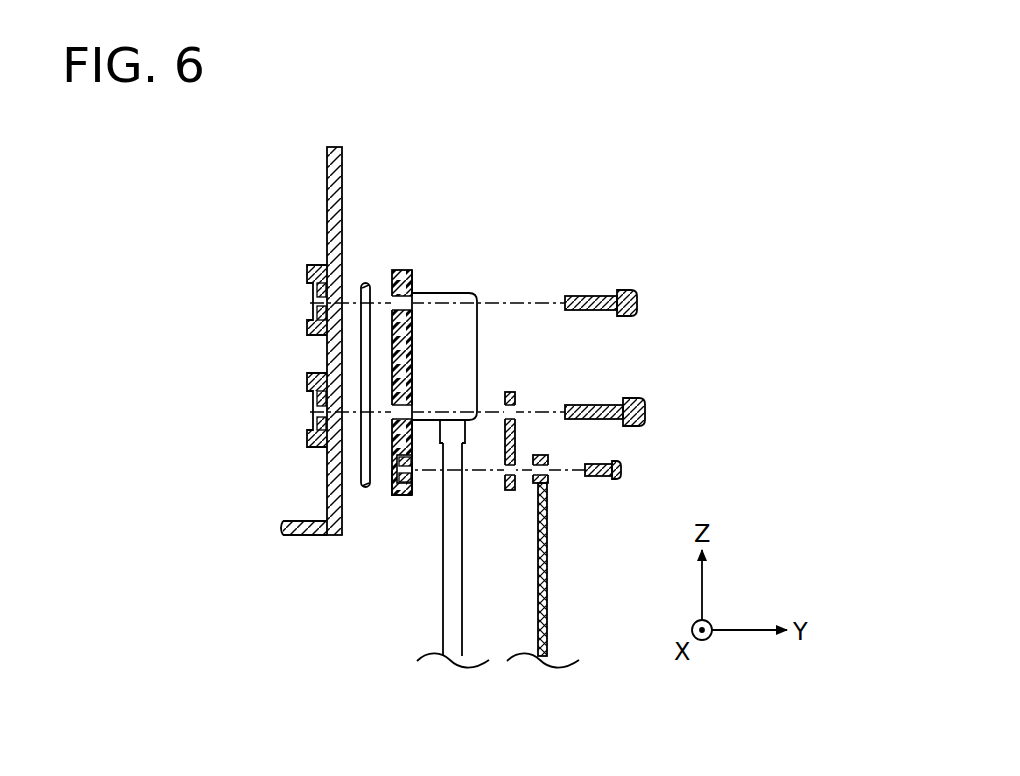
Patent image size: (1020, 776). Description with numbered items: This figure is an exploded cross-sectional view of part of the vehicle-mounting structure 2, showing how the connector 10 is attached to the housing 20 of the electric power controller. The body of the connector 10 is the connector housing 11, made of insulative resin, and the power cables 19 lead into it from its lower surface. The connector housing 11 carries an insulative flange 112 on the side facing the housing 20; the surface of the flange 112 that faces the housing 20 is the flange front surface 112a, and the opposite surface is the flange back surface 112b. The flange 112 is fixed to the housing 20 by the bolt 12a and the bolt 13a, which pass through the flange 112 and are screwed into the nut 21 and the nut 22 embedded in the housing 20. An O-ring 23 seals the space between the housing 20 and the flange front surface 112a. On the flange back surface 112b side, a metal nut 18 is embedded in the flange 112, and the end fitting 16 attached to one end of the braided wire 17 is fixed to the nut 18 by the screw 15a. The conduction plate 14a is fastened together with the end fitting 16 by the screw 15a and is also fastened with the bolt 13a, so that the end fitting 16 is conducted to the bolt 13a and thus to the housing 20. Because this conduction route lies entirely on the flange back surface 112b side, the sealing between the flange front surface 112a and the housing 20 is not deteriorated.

The vehicle-mounting structure 2 is at (491, 129).
The housing 20 is at (332, 180).
The nut 21 is at (314, 288).
The nut 22 is at (313, 401).
The O-ring 23 is at (365, 282).
The flange 112 is at (393, 374).
The flange front surface 112a is at (391, 489).
The flange back surface 112b is at (416, 276).
The nut 18 is at (413, 483).
The connector 10 is at (471, 433).
The connector housing 11 is at (450, 288).
The power cables 19 is at (450, 603).
The conduction plate 14a is at (507, 390).
The end fitting 16 is at (548, 482).
The braided wire 17 is at (547, 590).
The bolt 12a is at (637, 303).
The bolt 13a is at (645, 412).
The screw 15a is at (621, 470).